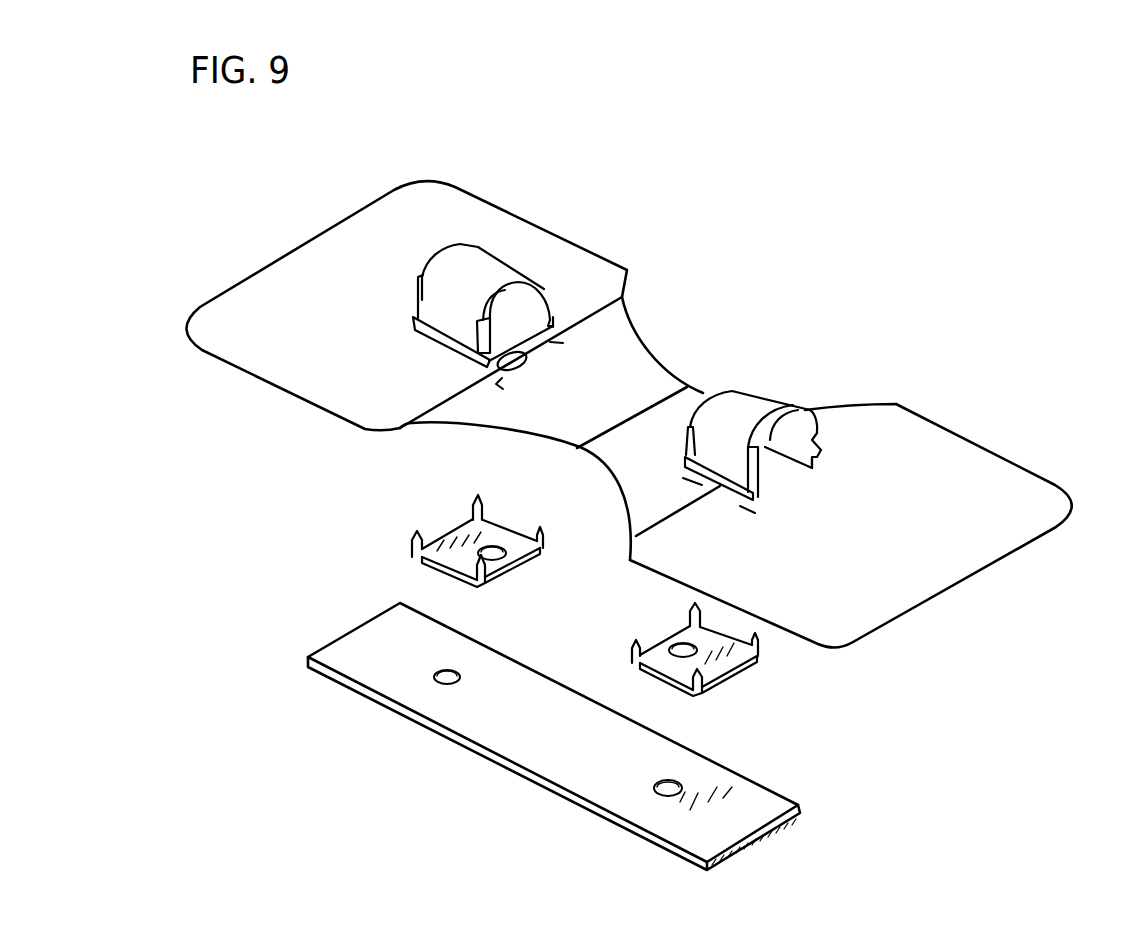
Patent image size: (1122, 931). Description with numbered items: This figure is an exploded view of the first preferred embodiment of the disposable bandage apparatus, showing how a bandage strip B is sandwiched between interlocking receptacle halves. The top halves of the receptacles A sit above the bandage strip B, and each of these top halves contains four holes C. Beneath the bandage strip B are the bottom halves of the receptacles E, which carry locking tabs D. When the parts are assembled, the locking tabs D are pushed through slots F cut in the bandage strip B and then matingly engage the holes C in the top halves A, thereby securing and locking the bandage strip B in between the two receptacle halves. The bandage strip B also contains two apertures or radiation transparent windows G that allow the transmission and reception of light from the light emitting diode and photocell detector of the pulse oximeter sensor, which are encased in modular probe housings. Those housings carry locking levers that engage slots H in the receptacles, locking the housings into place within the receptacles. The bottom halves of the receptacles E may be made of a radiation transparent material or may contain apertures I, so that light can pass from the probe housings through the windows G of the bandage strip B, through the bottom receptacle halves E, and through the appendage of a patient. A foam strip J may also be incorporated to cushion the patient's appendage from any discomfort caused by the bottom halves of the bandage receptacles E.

The top halves of the receptacles A is at (610, 364).
The bandage strip B is at (995, 450).
The holes C is at (487, 360).
The locking tabs D is at (472, 498).
The bottom halves of the receptacles E is at (581, 582).
The slots F is at (500, 384).
The radiation transparent windows G is at (513, 358).
The slots in the receptacles H is at (783, 402).
The apertures I is at (682, 638).
The foam strip J is at (547, 790).